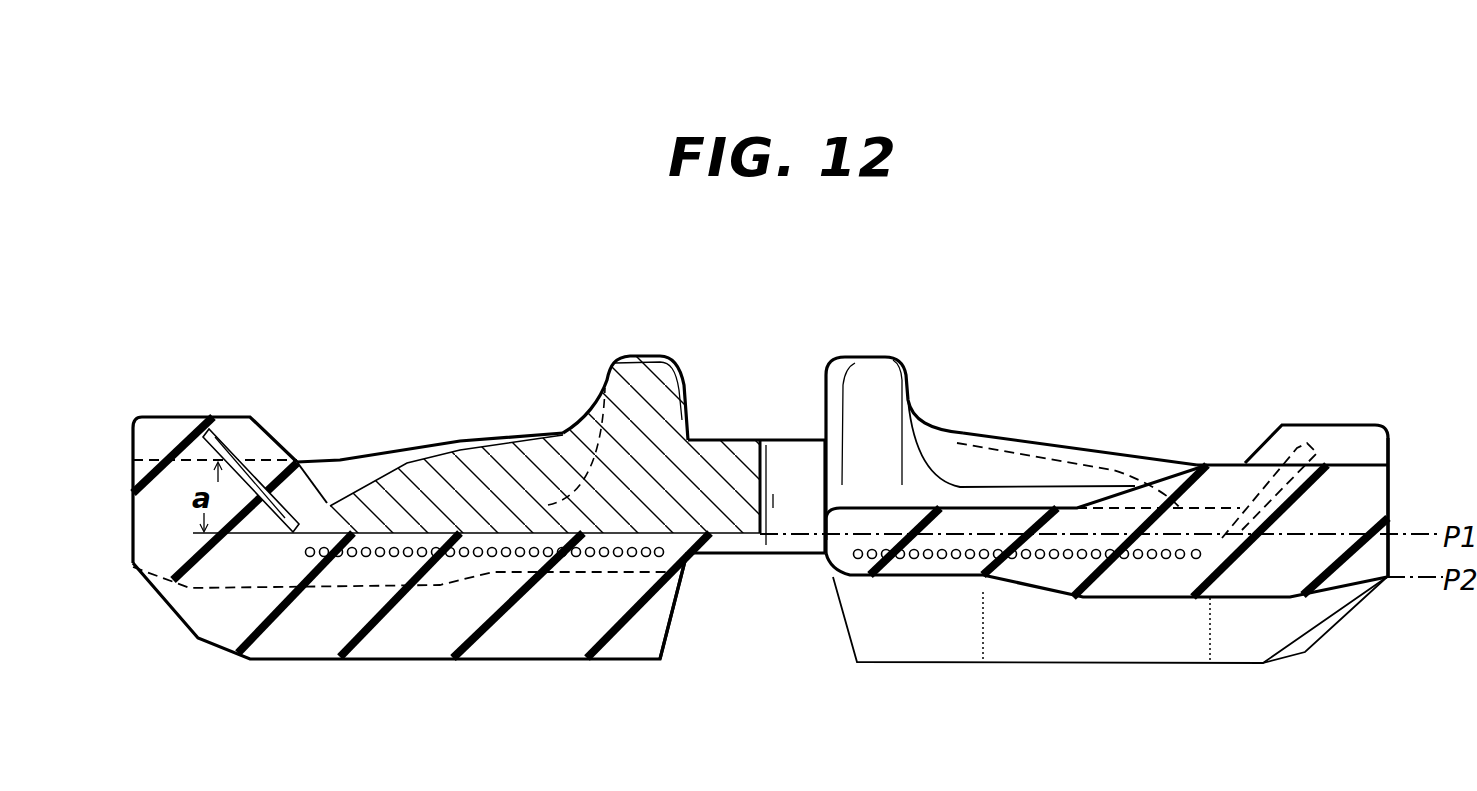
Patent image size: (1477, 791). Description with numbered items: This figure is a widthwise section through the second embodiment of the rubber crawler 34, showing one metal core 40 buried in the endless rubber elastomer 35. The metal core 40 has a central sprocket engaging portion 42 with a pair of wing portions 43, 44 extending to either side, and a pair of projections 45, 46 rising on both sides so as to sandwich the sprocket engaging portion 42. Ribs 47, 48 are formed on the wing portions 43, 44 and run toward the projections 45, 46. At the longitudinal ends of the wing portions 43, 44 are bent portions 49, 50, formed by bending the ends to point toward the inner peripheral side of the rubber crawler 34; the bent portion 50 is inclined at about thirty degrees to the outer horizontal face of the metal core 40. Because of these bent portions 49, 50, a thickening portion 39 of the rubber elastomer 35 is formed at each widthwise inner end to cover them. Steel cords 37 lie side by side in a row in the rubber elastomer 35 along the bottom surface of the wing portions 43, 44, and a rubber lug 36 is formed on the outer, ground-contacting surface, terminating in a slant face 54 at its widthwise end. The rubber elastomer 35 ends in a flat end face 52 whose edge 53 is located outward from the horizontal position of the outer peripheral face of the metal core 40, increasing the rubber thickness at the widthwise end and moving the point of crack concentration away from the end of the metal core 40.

The rubber crawler 34 is at (1323, 422).
The rubber elastomer 35 is at (347, 457).
The rubber lug 36 is at (543, 643).
The steel cords 37 is at (613, 557).
The thickening portion 39 is at (176, 418).
The metal core 40 is at (723, 437).
The sprocket engaging portion 42 is at (793, 450).
The wing portion 43 is at (1075, 507).
The wing portion 44 is at (292, 535).
The projection 45 is at (880, 373).
The projection 46 is at (650, 373).
The rib 47 is at (1020, 460).
The rib 48 is at (467, 473).
The bent portion 49 is at (1283, 457).
The bent portion 50 is at (230, 462).
The flat end face 52 is at (1393, 475).
The edge 53 is at (1392, 580).
The slant face 54 is at (1312, 640).